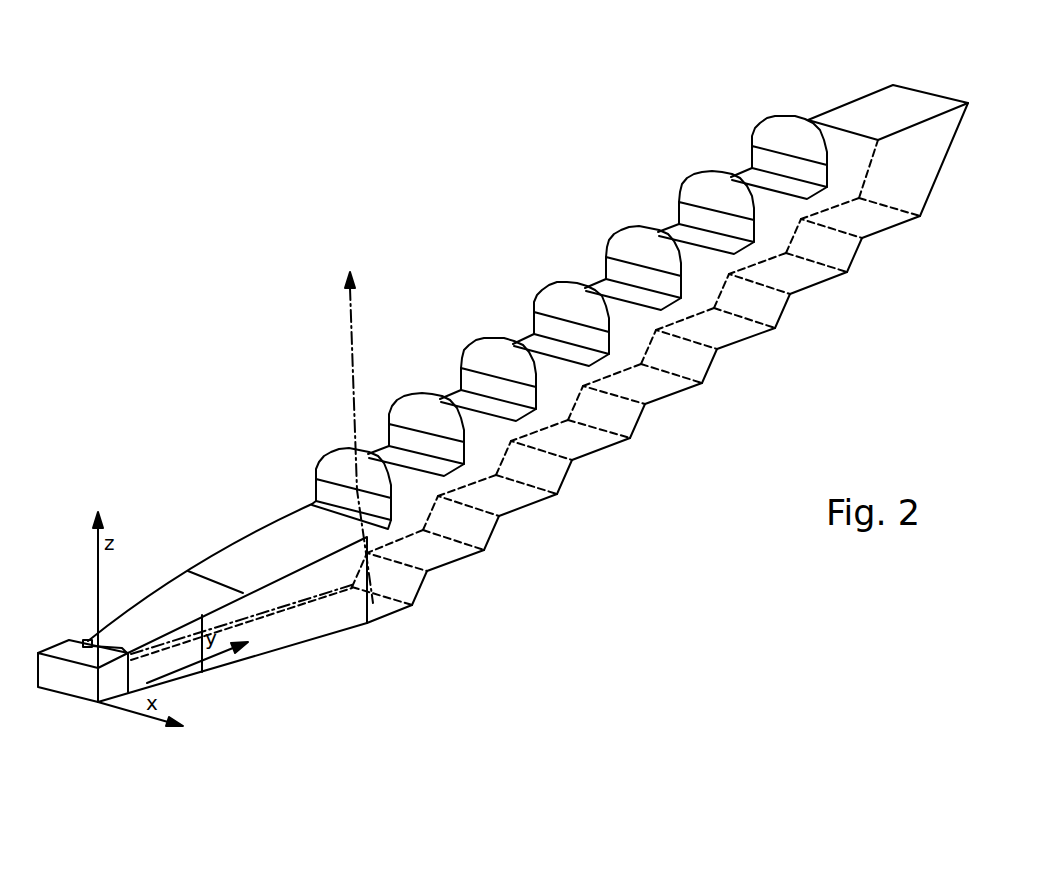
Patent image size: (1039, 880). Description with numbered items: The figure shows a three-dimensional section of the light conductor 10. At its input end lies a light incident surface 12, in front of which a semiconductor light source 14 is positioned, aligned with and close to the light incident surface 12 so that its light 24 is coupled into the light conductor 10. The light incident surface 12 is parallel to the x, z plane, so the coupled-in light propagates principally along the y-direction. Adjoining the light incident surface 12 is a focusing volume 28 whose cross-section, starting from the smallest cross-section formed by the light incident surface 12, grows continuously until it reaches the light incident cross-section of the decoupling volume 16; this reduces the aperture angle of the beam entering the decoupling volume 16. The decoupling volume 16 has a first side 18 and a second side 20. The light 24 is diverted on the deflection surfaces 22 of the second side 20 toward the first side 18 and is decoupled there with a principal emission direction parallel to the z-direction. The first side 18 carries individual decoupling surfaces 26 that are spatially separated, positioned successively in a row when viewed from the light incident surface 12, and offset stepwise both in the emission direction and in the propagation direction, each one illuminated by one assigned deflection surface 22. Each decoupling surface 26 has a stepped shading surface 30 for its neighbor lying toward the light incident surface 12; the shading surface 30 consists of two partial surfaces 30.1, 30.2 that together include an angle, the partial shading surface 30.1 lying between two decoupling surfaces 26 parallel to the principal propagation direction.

The light conductor 10 is at (637, 603).
The light incident surface 12 is at (88, 647).
The semiconductor light source 14 is at (97, 740).
The decoupling volume 16 is at (658, 377).
The first side 18 is at (379, 207).
The second side 20 is at (839, 382).
The deflection surfaces 22 is at (420, 589).
The light 24 is at (309, 600).
The decoupling surfaces 26 is at (622, 272).
The focusing volume 28 is at (268, 590).
The shading surface 30 is at (501, 321).
The partial shading surface 30.1 is at (540, 342).
The partial surface 30.2 is at (558, 330).